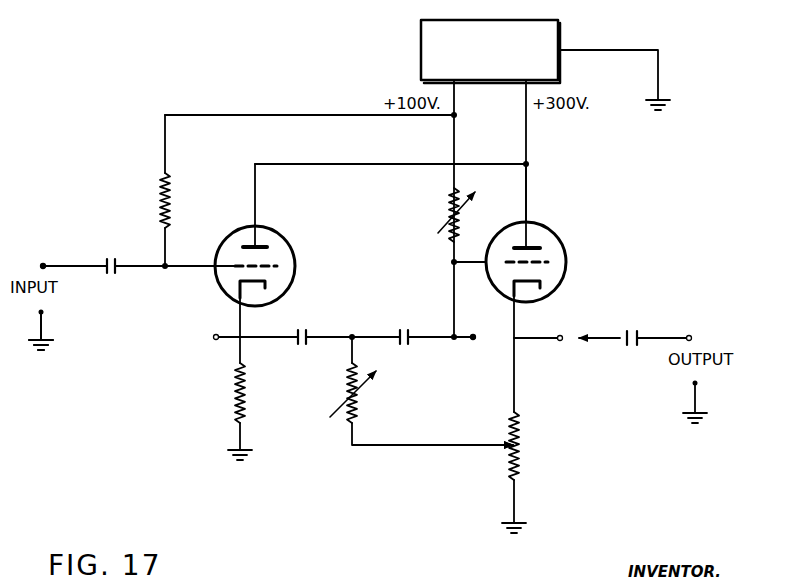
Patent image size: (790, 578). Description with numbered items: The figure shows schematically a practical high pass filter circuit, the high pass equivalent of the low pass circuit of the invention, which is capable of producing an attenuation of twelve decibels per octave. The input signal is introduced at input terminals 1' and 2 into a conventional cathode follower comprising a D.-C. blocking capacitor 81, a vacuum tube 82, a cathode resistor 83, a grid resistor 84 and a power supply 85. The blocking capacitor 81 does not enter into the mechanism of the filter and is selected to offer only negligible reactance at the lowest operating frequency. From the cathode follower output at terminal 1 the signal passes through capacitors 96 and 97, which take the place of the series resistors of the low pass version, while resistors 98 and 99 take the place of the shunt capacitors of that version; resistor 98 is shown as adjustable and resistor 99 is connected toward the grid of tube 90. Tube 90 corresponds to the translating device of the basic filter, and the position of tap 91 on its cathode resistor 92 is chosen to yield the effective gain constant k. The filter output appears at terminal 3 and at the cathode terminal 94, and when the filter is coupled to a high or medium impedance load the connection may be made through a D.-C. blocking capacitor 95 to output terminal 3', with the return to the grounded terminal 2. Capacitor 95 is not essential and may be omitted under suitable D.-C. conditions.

The input terminal 1 is at (204, 330).
The input terminal 1' is at (32, 255).
The ground terminal 2 is at (41, 312).
The output terminal 3 is at (483, 329).
The output terminal 3' is at (703, 329).
The D.-C. blocking capacitor 81 is at (107, 260).
The vacuum tube 82 is at (293, 258).
The cathode resistor 83 is at (238, 408).
The grid resistor 84 is at (162, 201).
The power supply 85 is at (421, 50).
The tube 90 is at (565, 257).
The tap 91 is at (500, 462).
The cathode resistor 92 is at (510, 428).
The output terminal 94 is at (562, 333).
The D.-C. blocking capacitor 95 is at (640, 330).
The capacitor 96 is at (307, 330).
The capacitor 97 is at (410, 330).
The resistor 98 is at (357, 418).
The resistor 99 is at (450, 210).